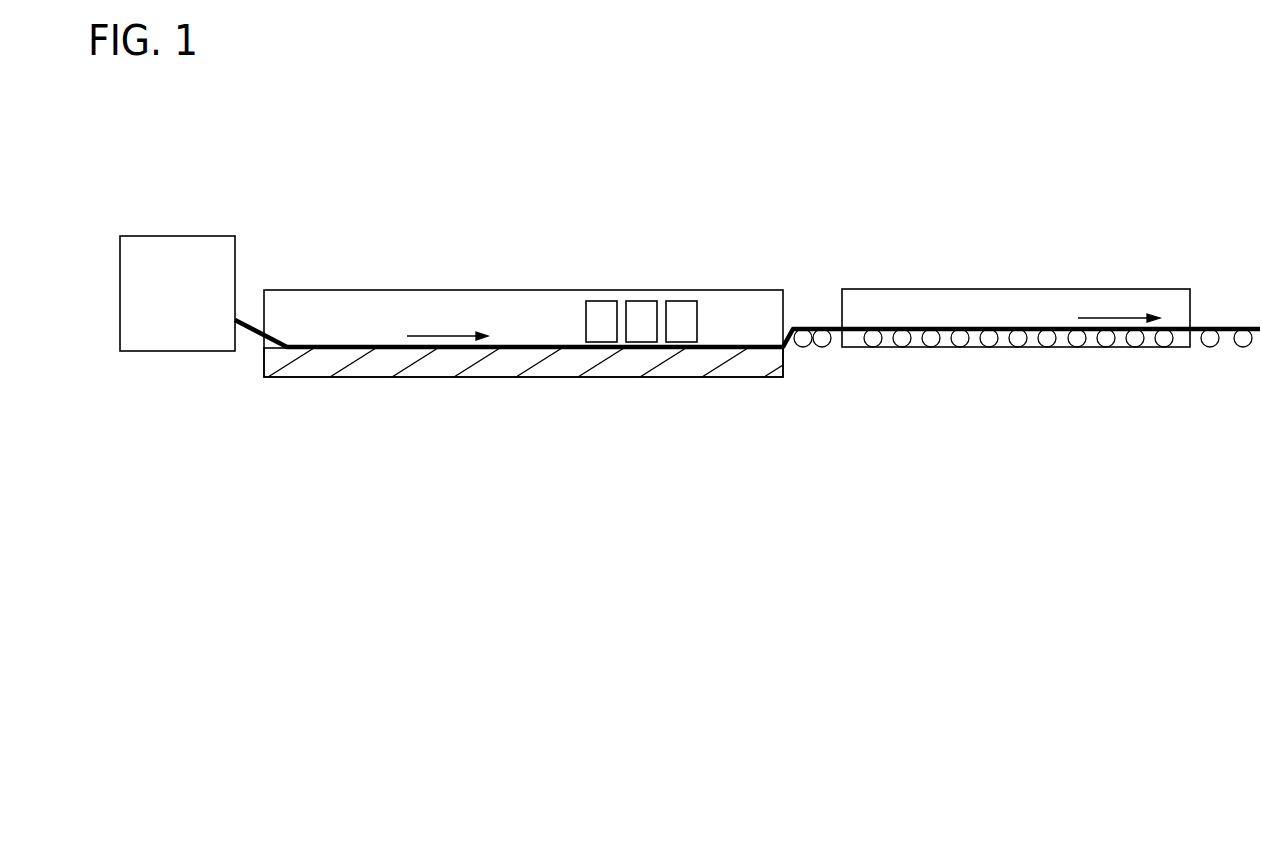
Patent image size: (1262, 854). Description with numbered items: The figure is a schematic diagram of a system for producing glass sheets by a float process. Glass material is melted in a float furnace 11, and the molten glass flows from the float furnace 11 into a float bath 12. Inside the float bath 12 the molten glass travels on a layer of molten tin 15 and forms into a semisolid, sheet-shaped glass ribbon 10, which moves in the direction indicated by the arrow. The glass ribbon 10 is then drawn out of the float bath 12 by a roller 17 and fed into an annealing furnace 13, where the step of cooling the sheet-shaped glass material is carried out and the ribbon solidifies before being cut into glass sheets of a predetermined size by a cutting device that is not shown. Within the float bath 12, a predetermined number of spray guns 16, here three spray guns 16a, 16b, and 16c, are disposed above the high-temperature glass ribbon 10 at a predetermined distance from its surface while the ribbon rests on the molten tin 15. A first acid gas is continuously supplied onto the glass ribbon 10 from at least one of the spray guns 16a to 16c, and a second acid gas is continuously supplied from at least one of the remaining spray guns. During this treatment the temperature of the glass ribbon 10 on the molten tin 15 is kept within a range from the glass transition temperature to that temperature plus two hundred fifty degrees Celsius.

The glass ribbon 10 is at (537, 345).
The float furnace 11 is at (185, 330).
The float bath 12 is at (408, 310).
The annealing furnace 13 is at (1010, 308).
The molten tin 15 is at (370, 368).
The spray guns 16 is at (705, 440).
The spray gun 16a is at (599, 330).
The spray gun 16b is at (639, 330).
The spray gun 16c is at (680, 330).
The roller 17 is at (803, 347).